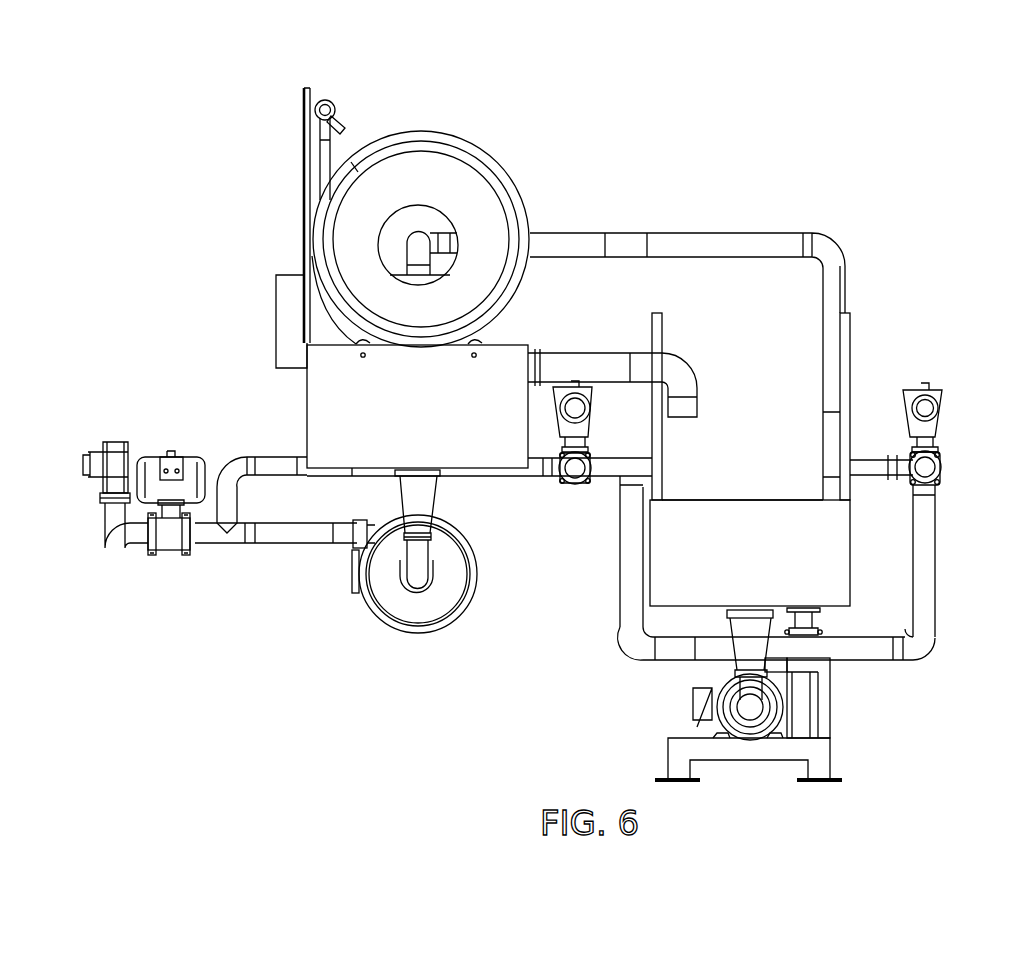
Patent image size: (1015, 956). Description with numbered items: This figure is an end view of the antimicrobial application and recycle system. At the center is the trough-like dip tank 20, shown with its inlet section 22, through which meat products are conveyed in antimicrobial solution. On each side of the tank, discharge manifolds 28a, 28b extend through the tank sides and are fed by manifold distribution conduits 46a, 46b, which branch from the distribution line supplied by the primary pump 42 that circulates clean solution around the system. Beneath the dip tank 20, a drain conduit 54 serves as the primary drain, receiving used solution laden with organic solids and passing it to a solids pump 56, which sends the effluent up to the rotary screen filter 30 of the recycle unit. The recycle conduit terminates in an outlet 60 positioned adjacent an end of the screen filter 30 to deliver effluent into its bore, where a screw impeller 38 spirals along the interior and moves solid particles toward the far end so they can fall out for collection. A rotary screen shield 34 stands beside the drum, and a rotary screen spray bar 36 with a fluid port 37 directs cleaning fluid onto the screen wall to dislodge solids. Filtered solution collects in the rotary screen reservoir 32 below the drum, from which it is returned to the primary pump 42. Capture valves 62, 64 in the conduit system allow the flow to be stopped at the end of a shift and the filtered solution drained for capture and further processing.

The dip tank 20 is at (763, 568).
The inlet section 22 is at (831, 553).
The discharge manifold 28a is at (892, 478).
The discharge manifold 28b is at (632, 468).
The rotary screen filter 30 is at (488, 150).
The rotary screen reservoir 32 is at (432, 421).
The rotary screen shield 34 is at (303, 184).
The rotary screen spray bar 36 is at (323, 99).
The fluid port 37 is at (345, 128).
The screw impeller 38 is at (440, 180).
The primary pump 42 is at (421, 603).
The manifold distribution conduit 46a is at (936, 552).
The manifold distribution conduit 46b is at (622, 601).
The drain conduit 54 is at (737, 628).
The solids pump 56 is at (752, 706).
The outlet 60 is at (412, 258).
The capture valve 62 is at (942, 410).
The capture valve 64 is at (592, 398).